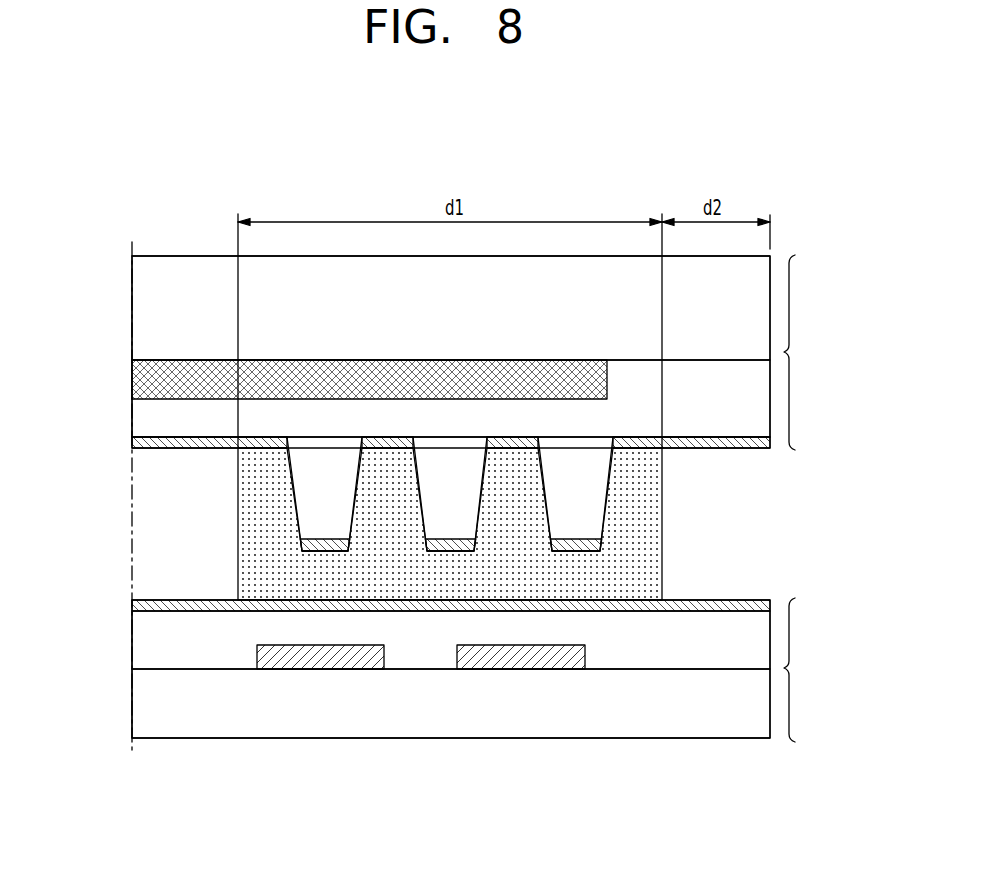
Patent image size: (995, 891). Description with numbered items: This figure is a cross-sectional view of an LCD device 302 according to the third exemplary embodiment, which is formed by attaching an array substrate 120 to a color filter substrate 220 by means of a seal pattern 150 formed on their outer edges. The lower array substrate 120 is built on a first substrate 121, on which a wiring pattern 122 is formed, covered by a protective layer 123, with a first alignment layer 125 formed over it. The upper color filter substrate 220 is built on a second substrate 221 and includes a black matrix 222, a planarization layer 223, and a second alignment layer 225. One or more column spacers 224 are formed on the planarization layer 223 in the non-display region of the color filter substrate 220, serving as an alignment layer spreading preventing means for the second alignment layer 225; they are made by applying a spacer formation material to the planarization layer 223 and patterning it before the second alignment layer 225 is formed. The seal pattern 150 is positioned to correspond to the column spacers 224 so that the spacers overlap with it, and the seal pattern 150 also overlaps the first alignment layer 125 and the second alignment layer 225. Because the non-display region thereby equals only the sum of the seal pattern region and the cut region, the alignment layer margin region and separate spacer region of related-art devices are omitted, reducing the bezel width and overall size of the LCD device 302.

The LCD device 302 is at (783, 213).
The color filter substrate 220 is at (482, 352).
The second substrate 221 is at (137, 307).
The black matrix 222 is at (140, 380).
The planarization layer 223 is at (140, 418).
The second alignment layer 225 is at (140, 441).
The column spacers 224 is at (312, 505).
The seal pattern 150 is at (252, 558).
The array substrate 120 is at (482, 670).
The first alignment layer 125 is at (135, 605).
The protective layer 123 is at (137, 630).
The wiring pattern 122 is at (257, 657).
The first substrate 121 is at (137, 710).